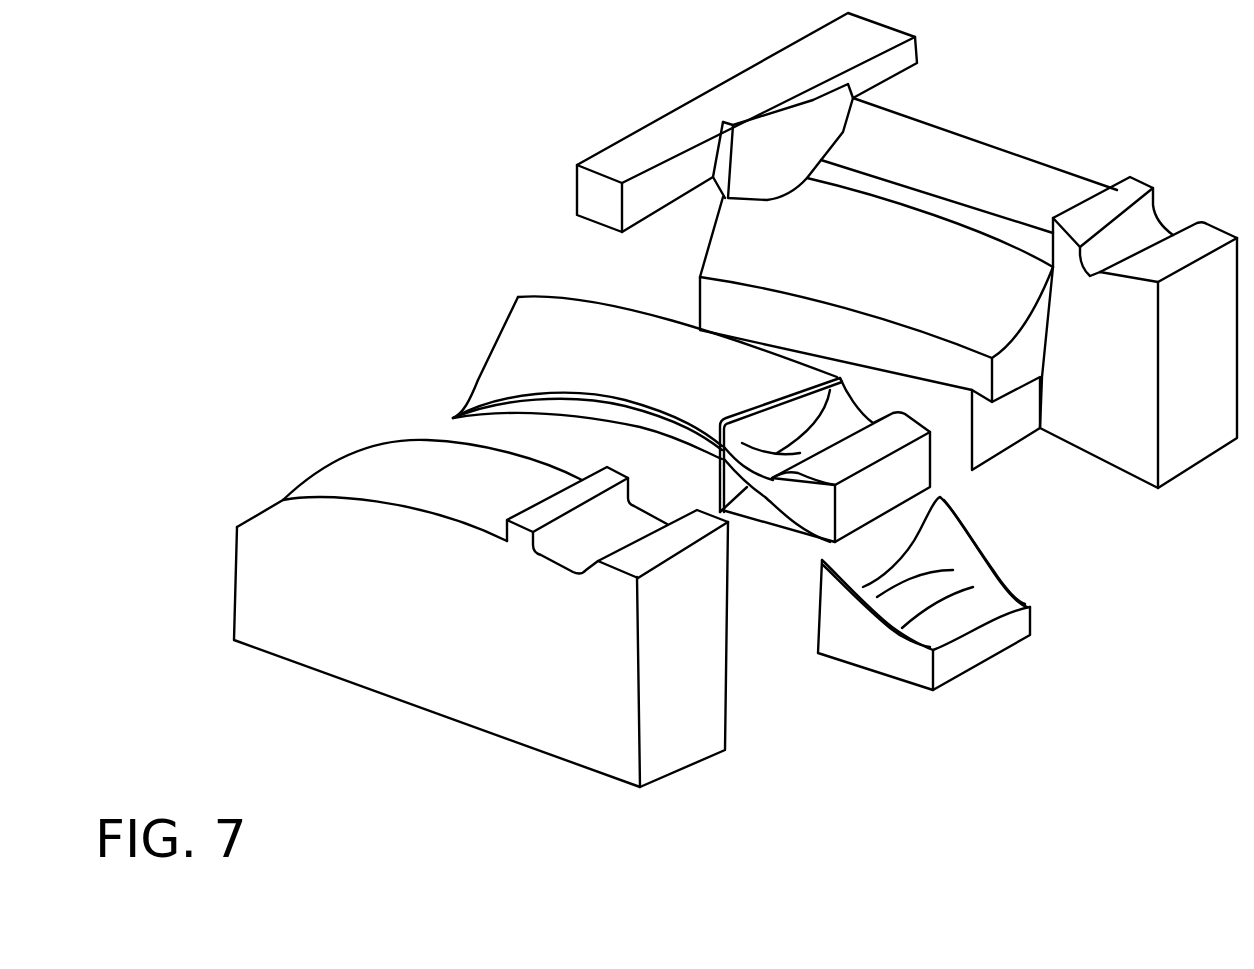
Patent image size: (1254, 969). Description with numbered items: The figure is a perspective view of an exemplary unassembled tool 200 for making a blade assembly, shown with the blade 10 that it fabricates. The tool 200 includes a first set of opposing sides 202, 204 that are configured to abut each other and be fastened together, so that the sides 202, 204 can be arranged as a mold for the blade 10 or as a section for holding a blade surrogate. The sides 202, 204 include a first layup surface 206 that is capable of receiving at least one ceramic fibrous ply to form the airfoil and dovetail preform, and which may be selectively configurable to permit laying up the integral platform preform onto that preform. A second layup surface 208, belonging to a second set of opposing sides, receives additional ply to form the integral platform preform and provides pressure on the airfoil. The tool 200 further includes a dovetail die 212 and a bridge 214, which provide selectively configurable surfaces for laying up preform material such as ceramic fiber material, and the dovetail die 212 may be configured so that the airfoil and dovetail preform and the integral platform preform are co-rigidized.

The tool 200 is at (398, 120).
The first opposing side 202 is at (418, 668).
The second opposing side 204 is at (987, 198).
The first layup surface 206 is at (871, 273).
The second layup surface 208 is at (850, 123).
The dovetail die 212 is at (982, 667).
The bridge 214 is at (781, 77).
The blade 10 is at (543, 337).